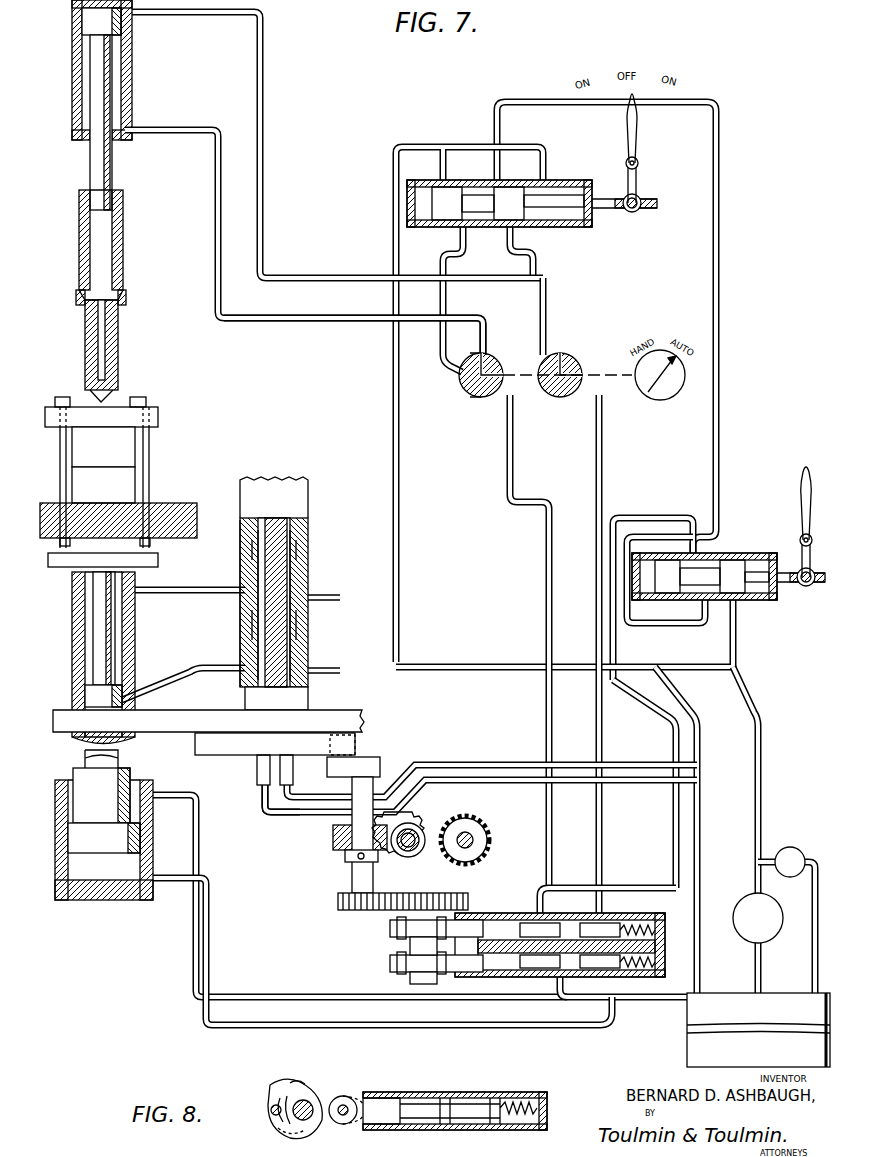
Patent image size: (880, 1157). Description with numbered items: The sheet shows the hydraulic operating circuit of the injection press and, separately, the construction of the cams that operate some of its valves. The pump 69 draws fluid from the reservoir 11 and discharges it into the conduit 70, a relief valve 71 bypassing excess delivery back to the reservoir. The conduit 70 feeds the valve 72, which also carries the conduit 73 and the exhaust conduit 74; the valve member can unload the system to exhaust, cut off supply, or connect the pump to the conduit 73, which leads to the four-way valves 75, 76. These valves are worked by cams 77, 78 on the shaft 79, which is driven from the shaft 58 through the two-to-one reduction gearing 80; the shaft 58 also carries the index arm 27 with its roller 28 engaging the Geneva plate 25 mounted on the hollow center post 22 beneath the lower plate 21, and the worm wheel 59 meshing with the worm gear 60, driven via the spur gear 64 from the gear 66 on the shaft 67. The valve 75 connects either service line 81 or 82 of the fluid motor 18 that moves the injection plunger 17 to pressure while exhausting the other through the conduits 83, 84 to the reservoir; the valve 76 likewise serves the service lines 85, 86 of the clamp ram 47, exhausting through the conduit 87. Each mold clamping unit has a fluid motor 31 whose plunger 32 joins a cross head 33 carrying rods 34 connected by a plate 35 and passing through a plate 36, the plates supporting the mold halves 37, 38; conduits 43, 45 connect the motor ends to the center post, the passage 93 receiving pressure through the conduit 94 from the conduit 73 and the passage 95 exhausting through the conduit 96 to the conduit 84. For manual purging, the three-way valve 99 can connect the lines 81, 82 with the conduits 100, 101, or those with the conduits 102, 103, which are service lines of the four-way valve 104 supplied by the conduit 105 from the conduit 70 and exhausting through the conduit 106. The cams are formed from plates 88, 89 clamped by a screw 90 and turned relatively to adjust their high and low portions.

In FIG. 7, the reservoir 11 is at (731, 995).
In FIG. 7, the injection plunger 17 is at (107, 176).
In FIG. 7, the fluid motor 18 is at (133, 78).
In FIG. 7, the lower plate 21 is at (340, 715).
In FIG. 7, the hollow center post 22 is at (300, 538).
In FIG. 7, the Geneva plate 25 is at (228, 757).
In FIG. 7, the arm 27 is at (364, 766).
In FIG. 7, the roller 28 is at (356, 746).
In FIG. 7, the fluid motor 31 is at (75, 656).
In FIG. 7, the plunger 32 is at (116, 617).
In FIG. 7, the cross head 33 is at (158, 560).
In FIG. 7, the rods 34 is at (152, 434).
In FIG. 7, the plate 35 is at (158, 412).
In FIG. 7, the plate 36 is at (160, 505).
In FIG. 7, the mold half 37 is at (132, 446).
In FIG. 7, the mold half 38 is at (125, 471).
In FIG. 7, the conduit 43 is at (219, 593).
In FIG. 7, the conduit 45 is at (177, 672).
In FIG. 7, the ram 47 is at (112, 790).
In FIG. 7, the shaft 58 is at (355, 878).
In FIG. 7, the worm wheel 59 is at (340, 836).
In FIG. 7, the worm gear 60 is at (416, 828).
In FIG. 7, the spur gear 64 is at (426, 862).
In FIG. 7, the gear 66 is at (490, 832).
In FIG. 7, the shaft 67 is at (474, 840).
In FIG. 7, the pump 69 is at (747, 900).
In FIG. 7, the conduit 70 is at (762, 804).
In FIG. 7, the relief valve 71 is at (801, 850).
In FIG. 7, the valve 72 is at (748, 590).
In FIG. 7, the conduit 73 is at (697, 518).
In FIG. 7, the exhaust conduit 74 is at (740, 651).
In FIG. 7, the four-way valve 75 is at (519, 906).
In FIG. 8, the four-way valve 75 is at (512, 1097).
In FIG. 7, the four-way valve 76 is at (505, 989).
In FIG. 7, the cam 77 is at (390, 928).
In FIG. 7, the cam 78 is at (390, 966).
In FIG. 7, the shaft 79 is at (418, 947).
In FIG. 8, the shaft 79 is at (310, 1104).
In FIG. 7, the reduction gearing 80 is at (338, 901).
In FIG. 7, the service line 81 is at (603, 862).
In FIG. 7, the service line 82 is at (553, 862).
In FIG. 7, the conduit 83 is at (628, 890).
In FIG. 7, the conduit 84 is at (701, 940).
In FIG. 7, the service line 85 is at (564, 992).
In FIG. 7, the service line 86 is at (605, 1026).
In FIG. 7, the conduit 87 is at (648, 998).
In FIG. 8, the plate 88 is at (284, 1100).
In FIG. 8, the plate 89 is at (294, 1084).
In FIG. 8, the screw 90 is at (272, 1113).
In FIG. 7, the passage 93 is at (284, 522).
In FIG. 7, the conduit 94 is at (424, 771).
In FIG. 7, the passage 95 is at (243, 529).
In FIG. 7, the conduit 96 is at (270, 815).
In FIG. 7, the three-way valve 99 is at (570, 354).
In FIG. 7, the conduit 100 is at (560, 286).
In FIG. 7, the conduit 101 is at (475, 320).
In FIG. 7, the conduit 102 is at (535, 254).
In FIG. 7, the conduit 103 is at (447, 259).
In FIG. 7, the four-way valve 104 is at (590, 180).
In FIG. 7, the conduit 105 is at (721, 176).
In FIG. 7, the exhaust conduit 106 is at (470, 147).